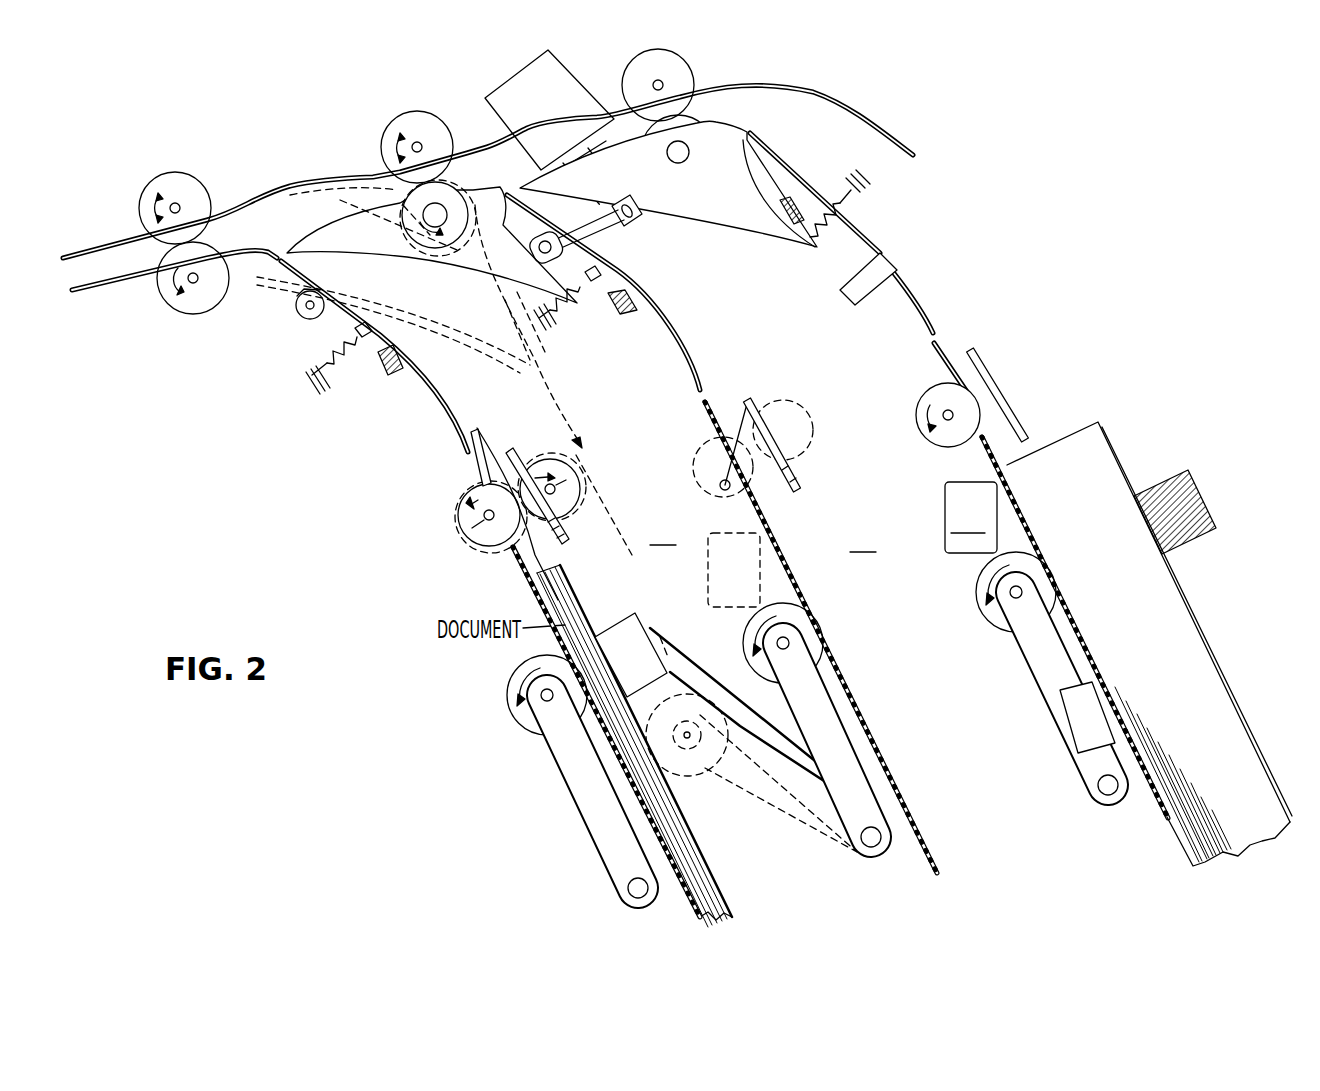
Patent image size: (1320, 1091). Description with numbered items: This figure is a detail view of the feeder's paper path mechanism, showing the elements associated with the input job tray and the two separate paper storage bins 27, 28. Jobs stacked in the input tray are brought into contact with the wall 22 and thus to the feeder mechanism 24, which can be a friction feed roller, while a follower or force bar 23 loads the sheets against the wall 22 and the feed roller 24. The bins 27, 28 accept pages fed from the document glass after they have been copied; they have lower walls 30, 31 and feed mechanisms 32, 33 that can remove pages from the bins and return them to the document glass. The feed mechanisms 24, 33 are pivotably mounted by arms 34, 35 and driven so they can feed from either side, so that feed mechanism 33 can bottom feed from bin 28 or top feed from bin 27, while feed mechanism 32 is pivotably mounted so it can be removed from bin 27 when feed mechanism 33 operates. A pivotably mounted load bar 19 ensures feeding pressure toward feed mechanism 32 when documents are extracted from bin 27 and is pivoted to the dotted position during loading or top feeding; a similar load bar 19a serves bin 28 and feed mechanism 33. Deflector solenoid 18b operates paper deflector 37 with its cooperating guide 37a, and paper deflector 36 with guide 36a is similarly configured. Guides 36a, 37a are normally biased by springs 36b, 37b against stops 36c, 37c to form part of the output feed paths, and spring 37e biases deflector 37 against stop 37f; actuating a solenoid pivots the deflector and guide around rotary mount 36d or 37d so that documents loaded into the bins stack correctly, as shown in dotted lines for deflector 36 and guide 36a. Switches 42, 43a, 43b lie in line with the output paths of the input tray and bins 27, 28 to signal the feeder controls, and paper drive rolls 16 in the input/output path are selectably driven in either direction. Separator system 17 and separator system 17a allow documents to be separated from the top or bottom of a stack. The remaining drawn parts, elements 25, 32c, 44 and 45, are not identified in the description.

The paper drive rolls 16 is at (352, 139).
The separator system 17 is at (446, 511).
The separator system 17a is at (706, 441).
The deflector solenoid 18b is at (548, 52).
The load bar 19 is at (608, 630).
The load bar 19a is at (971, 517).
The wall 22 is at (917, 300).
The force bar 23 is at (1200, 499).
The feeder mechanism 24 is at (996, 615).
The stop block 25 is at (851, 300).
The paper storage bin 27 is at (663, 532).
The paper storage bin 28 is at (863, 539).
The lower wall 30 is at (633, 814).
The lower wall 31 is at (902, 793).
The feed mechanism 32 is at (512, 701).
The pivot 32c is at (626, 880).
The feed mechanism 33 is at (755, 647).
The arm 34 is at (1040, 676).
The arm 35 is at (850, 704).
The paper deflector 36 is at (483, 195).
The guide 36a is at (456, 421).
The spring 36b is at (328, 357).
The stop 36c is at (386, 372).
The rotary mount 36d is at (298, 309).
The paper deflector 37 is at (712, 135).
The guide 37a is at (657, 318).
The spring 37b is at (586, 282).
The stop 37c is at (625, 316).
The rotary mount 37d is at (561, 249).
The spring 37e is at (842, 206).
The stop 37f is at (795, 198).
The switch 42 is at (976, 345).
The switch 43a is at (472, 432).
The switch 43b is at (750, 398).
The block 44 is at (1080, 726).
The roller 45 is at (928, 423).